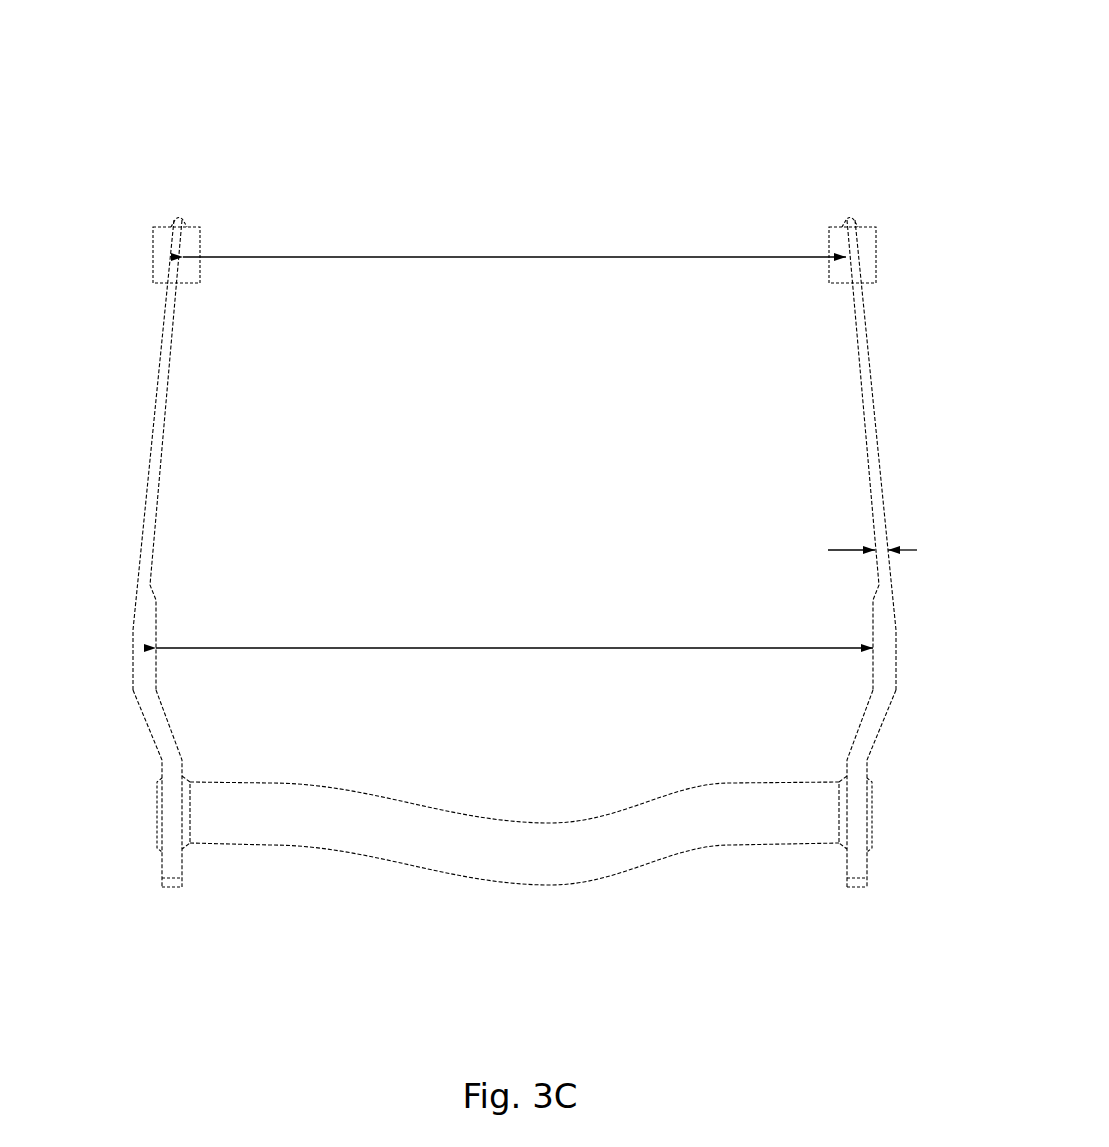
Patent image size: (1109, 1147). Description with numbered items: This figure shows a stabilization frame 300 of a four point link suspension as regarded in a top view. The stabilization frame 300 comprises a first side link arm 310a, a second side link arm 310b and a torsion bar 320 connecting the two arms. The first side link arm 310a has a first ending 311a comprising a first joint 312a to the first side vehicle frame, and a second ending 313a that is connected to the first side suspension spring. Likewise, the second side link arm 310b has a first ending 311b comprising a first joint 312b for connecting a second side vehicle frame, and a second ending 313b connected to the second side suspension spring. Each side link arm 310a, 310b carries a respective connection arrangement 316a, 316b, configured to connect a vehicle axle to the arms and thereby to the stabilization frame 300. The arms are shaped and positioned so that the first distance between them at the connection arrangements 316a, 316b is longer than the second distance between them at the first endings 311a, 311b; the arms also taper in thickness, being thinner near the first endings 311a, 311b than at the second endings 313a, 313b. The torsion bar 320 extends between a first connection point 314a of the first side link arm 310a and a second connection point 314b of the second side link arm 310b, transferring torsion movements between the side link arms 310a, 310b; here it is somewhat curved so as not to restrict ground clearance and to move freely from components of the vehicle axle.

The stabilization frame 300 is at (849, 63).
The first side link arm 310a is at (163, 420).
The second side link arm 310b is at (873, 419).
The first ending 311a is at (178, 218).
The first ending 311b is at (851, 218).
The first joint 312a is at (153, 248).
The first joint 312b is at (876, 248).
The second ending 313a is at (177, 875).
The second ending 313b is at (857, 873).
The first connection point 314a is at (157, 810).
The second connection point 314b is at (872, 815).
The connection arrangement 316a is at (156, 658).
The connection arrangement 316b is at (893, 652).
The torsion bar 320 is at (651, 845).